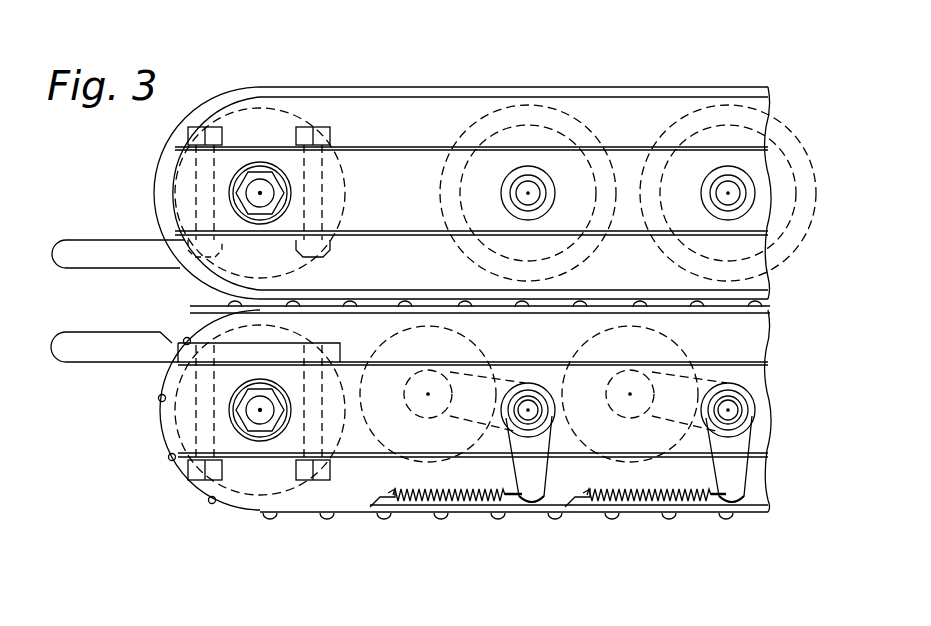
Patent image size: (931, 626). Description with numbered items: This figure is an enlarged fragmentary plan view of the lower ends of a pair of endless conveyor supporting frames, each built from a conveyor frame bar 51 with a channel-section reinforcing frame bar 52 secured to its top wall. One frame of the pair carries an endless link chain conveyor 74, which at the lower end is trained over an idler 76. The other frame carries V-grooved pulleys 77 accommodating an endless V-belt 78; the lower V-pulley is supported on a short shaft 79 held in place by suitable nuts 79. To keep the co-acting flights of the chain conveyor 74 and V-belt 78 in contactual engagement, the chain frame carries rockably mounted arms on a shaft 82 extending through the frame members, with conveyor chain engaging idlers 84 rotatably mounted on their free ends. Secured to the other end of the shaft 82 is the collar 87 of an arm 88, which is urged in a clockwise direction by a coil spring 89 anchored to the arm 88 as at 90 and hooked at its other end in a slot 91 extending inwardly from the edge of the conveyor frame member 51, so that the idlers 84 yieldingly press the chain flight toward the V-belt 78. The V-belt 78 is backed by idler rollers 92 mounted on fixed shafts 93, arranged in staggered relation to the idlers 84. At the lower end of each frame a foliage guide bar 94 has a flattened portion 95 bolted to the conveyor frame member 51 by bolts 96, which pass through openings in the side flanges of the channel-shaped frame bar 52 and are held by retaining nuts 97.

The conveyor frame bar 51 is at (366, 447).
The reinforcing frame bar 52 is at (440, 149).
The link chain conveyor 74 is at (388, 508).
The idler 76 is at (210, 500).
The pulley 77 is at (316, 135).
The endless V-belt 78 is at (428, 95).
The short shaft 79 is at (258, 190).
The shaft 82 is at (530, 406).
The conveyor chain engaging idler 84 is at (470, 370).
The collar 87 is at (548, 400).
The arm 88 is at (541, 475).
The coil spring 89 is at (493, 498).
The spring anchor point 90 is at (532, 506).
The slot 91 is at (392, 498).
The idler roller 92 is at (582, 130).
The fixed shaft 93 is at (530, 188).
The bar 94 is at (110, 257).
The flattened portion 95 is at (236, 248).
The bolt 96 is at (192, 183).
The retaining nut 97 is at (188, 470).